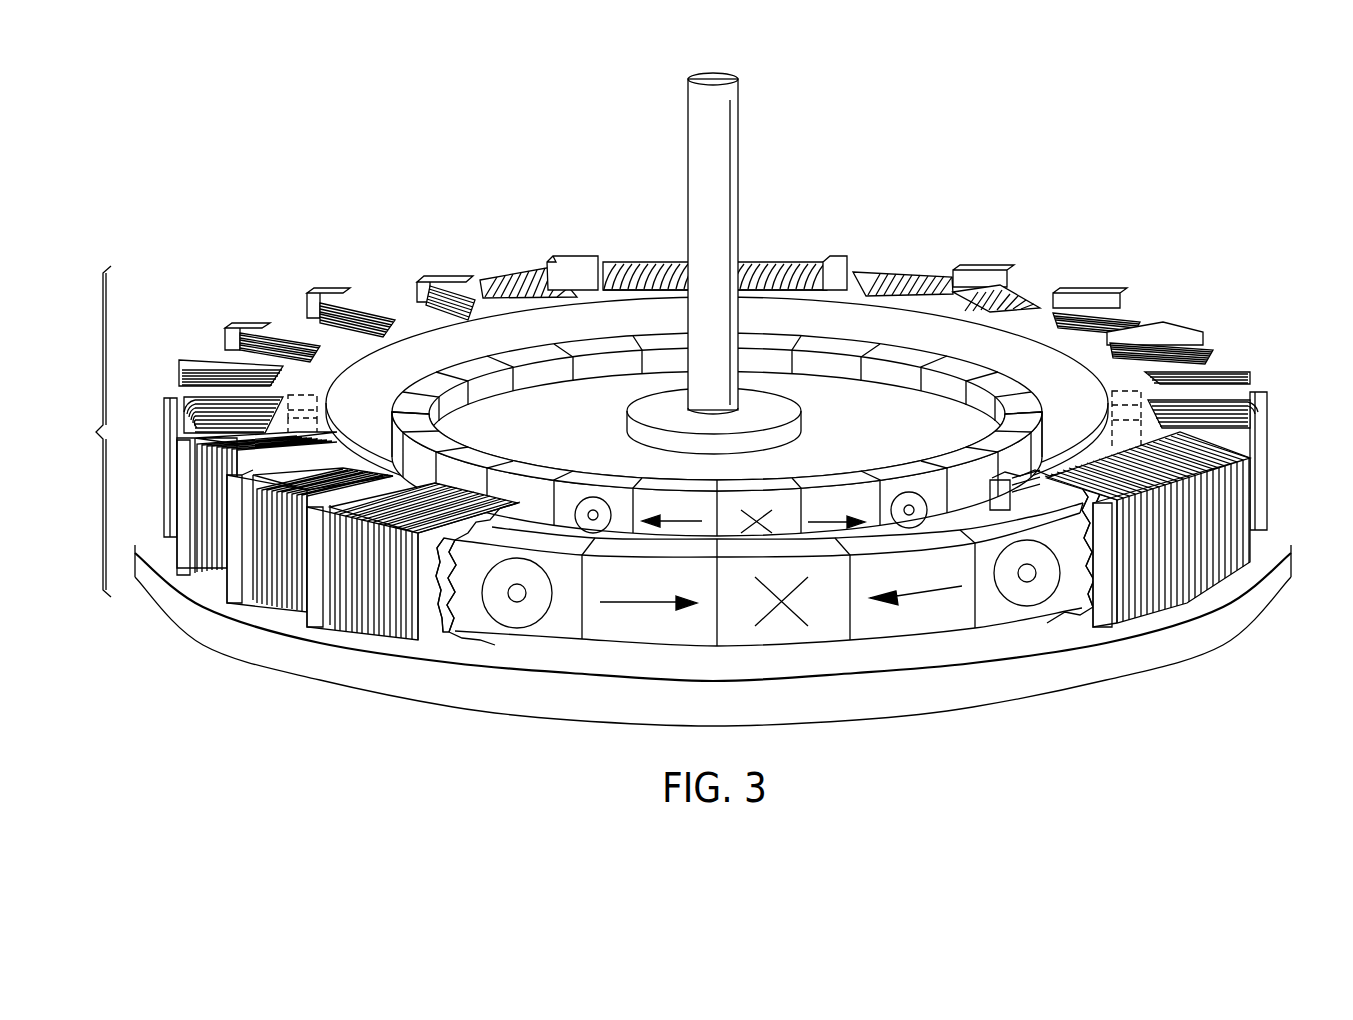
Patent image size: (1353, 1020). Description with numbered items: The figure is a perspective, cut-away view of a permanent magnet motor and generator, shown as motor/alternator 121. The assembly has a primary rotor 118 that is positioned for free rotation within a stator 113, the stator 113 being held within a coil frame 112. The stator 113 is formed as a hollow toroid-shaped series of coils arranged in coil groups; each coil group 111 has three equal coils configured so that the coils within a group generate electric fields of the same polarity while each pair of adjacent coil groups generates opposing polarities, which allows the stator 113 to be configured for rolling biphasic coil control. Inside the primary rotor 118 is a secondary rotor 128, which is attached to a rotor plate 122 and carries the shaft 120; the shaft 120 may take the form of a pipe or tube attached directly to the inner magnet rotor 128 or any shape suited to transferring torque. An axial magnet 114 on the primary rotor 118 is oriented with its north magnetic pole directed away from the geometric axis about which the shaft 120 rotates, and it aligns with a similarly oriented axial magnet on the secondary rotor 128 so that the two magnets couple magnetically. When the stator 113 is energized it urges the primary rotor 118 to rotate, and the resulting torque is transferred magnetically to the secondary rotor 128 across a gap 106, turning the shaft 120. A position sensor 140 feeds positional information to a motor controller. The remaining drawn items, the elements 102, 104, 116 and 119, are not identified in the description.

The axial flux motor 102 is at (1268, 457).
The stator 104 is at (715, 412).
The gap 106 is at (707, 437).
The coil group 111 is at (330, 713).
The coil frame 112 is at (538, 300).
The stator 113 is at (908, 268).
The axial magnet 114 is at (771, 624).
The base plate 116 is at (1213, 648).
The primary rotor 118 is at (620, 633).
The hub 119 is at (627, 430).
The shaft 120 is at (688, 187).
The motor/alternator 121 is at (81, 431).
The rotor plate 122 is at (893, 445).
The secondary rotor 128 is at (488, 390).
The position sensor 140 is at (305, 395).